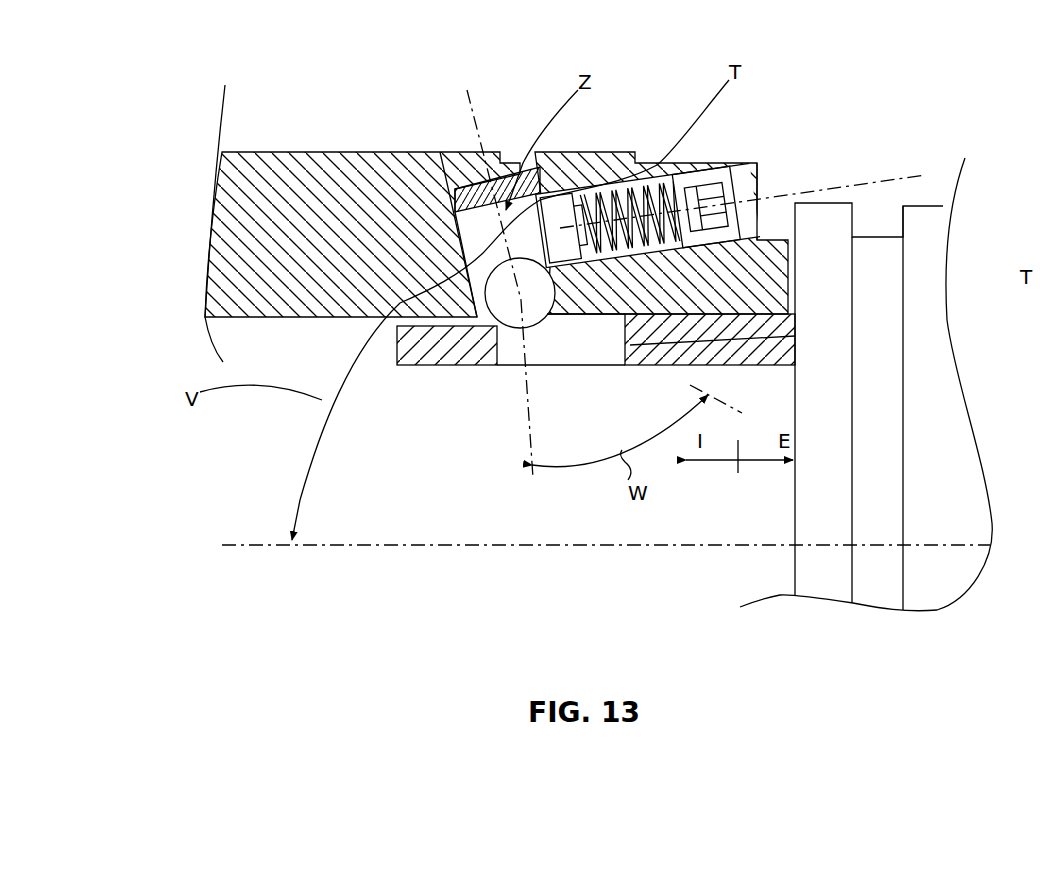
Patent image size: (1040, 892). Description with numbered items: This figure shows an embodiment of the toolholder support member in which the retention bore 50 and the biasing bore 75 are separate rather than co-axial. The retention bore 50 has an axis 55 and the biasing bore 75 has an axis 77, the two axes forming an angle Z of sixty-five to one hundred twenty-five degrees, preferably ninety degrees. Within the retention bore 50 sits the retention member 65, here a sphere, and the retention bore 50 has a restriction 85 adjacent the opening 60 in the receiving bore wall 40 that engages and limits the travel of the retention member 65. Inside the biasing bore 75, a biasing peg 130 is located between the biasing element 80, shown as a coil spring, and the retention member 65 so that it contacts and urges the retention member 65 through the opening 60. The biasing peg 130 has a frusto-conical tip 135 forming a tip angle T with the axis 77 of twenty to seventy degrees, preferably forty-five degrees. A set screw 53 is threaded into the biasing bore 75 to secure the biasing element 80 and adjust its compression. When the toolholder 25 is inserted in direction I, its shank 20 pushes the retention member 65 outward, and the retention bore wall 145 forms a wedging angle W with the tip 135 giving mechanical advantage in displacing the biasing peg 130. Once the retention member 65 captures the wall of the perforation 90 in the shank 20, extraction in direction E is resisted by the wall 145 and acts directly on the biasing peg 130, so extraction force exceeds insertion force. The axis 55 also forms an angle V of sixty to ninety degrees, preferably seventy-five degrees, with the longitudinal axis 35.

The toolholder shank 20 is at (397, 346).
The toolholder 25 is at (918, 259).
The longitudinal axis 35 is at (240, 545).
The receiving bore wall 40 is at (745, 365).
The retention bore 50 is at (500, 247).
The set screw 53 is at (710, 164).
The retention bore axis 55 is at (470, 103).
The opening 60 is at (795, 336).
The retention member 65 is at (515, 328).
The biasing bore 75 is at (569, 230).
The biasing bore axis 77 is at (862, 182).
The biasing element 80 is at (648, 178).
The restriction 85 is at (490, 320).
The perforation 90 is at (757, 220).
The biasing peg 130 is at (583, 186).
The frusto-conical tip 135 is at (455, 212).
The retention bore wall 145 is at (545, 318).